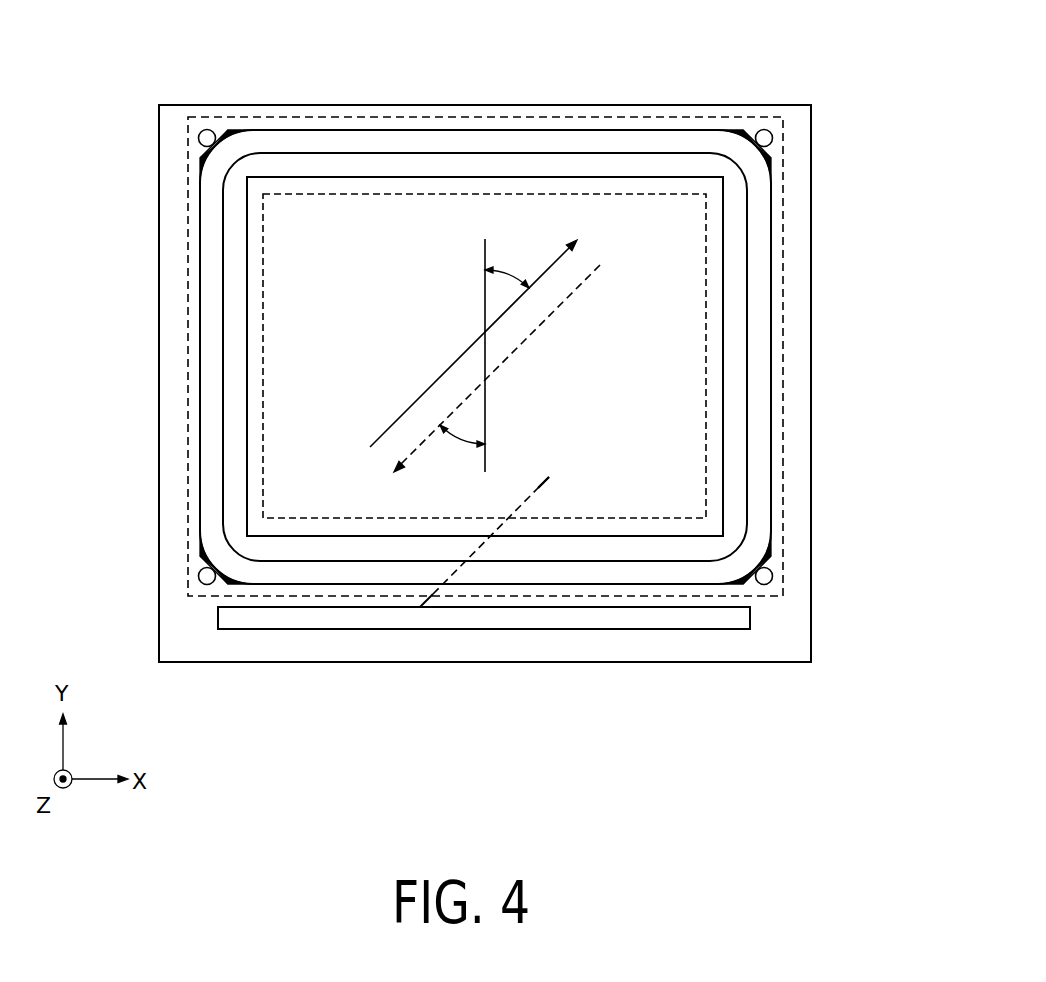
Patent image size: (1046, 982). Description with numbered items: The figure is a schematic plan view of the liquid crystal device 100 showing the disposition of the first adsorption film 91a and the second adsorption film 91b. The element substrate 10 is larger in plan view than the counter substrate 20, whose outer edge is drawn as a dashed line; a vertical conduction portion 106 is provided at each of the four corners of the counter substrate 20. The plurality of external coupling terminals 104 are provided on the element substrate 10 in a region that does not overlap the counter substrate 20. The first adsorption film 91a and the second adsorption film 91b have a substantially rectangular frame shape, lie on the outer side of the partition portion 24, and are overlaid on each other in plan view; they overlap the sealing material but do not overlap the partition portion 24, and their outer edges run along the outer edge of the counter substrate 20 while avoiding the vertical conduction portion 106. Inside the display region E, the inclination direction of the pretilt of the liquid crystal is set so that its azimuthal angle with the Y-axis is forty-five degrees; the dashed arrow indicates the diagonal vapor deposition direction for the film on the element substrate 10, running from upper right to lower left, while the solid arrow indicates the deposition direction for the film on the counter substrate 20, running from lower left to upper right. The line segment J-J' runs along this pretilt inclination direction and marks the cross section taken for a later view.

The liquid crystal device 100 is at (857, 22).
The element substrate 10 is at (775, 647).
The counter substrate 20 is at (783, 242).
The partition portion 24 is at (713, 309).
The first adsorption film 91a is at (443, 167).
The second adsorption film 91b is at (485, 357).
The external coupling terminals 104 is at (348, 618).
The vertical conduction portion 106 is at (198, 138).
The display region E is at (694, 382).
The line segment J-J' endpoint J is at (484, 570).
The line segment J-J' endpoint J' is at (565, 497).